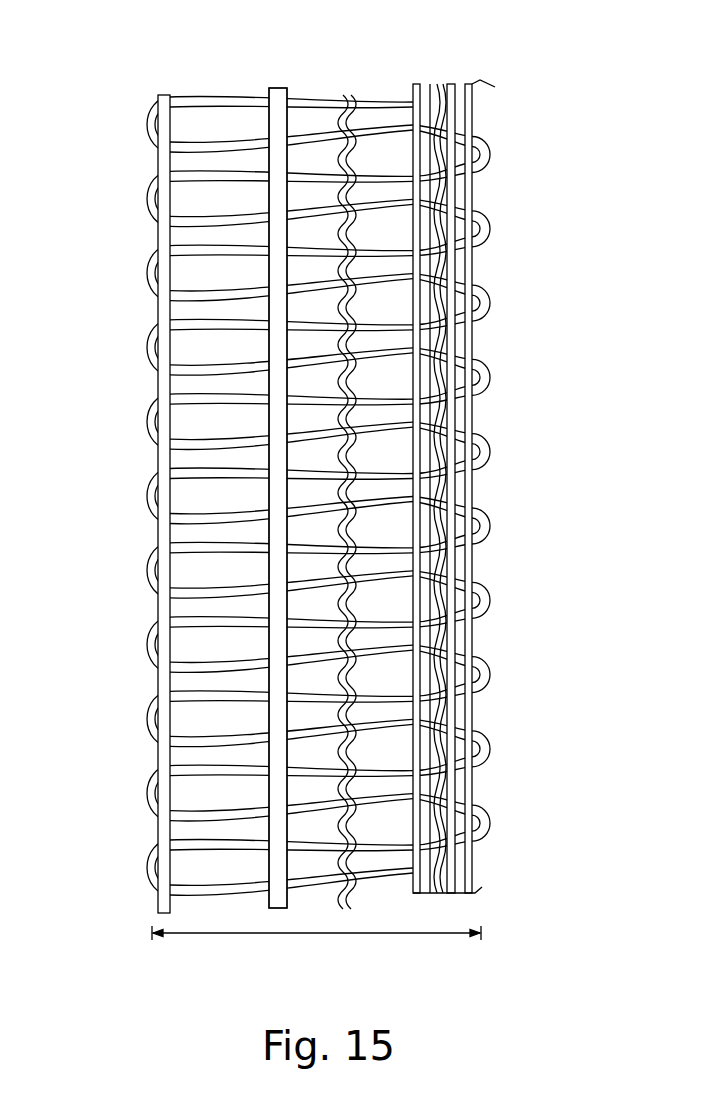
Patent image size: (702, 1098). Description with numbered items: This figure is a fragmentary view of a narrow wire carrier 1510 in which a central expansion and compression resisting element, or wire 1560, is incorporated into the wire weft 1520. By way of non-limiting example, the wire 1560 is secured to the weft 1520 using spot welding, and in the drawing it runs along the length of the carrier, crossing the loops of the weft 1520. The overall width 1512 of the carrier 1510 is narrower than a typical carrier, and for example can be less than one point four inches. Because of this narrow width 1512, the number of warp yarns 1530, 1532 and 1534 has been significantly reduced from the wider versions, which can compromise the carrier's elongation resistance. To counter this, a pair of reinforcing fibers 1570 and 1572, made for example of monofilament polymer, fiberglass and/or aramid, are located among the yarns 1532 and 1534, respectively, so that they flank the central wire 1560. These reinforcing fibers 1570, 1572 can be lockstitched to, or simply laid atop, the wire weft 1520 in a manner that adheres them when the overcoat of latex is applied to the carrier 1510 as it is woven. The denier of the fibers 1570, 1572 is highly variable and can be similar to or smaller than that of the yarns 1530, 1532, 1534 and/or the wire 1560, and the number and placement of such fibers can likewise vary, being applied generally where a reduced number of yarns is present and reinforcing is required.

The wire carrier 1510 is at (371, 92).
The overall width 1512 is at (302, 935).
The wire weft 1520 is at (212, 95).
The warp yarn 1530 is at (163, 818).
The warp yarn 1532 is at (280, 713).
The warp yarn 1534 is at (438, 792).
The expansion and compression resisting element (wire) 1560 is at (340, 95).
The reinforcing fiber 1570 is at (280, 423).
The reinforcing fiber 1572 is at (415, 620).